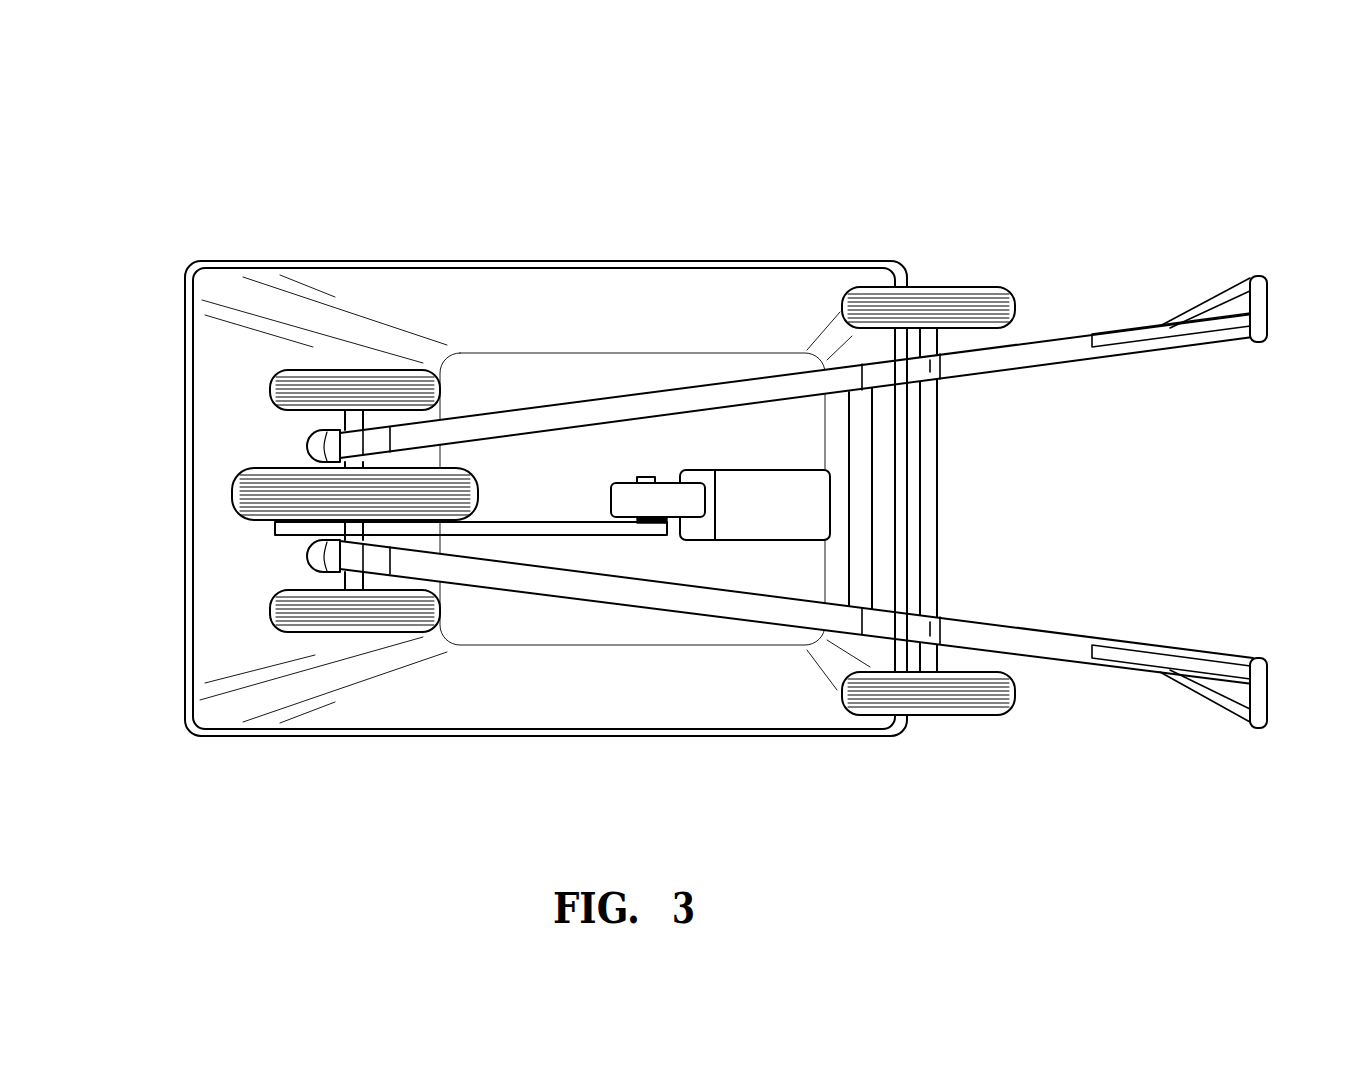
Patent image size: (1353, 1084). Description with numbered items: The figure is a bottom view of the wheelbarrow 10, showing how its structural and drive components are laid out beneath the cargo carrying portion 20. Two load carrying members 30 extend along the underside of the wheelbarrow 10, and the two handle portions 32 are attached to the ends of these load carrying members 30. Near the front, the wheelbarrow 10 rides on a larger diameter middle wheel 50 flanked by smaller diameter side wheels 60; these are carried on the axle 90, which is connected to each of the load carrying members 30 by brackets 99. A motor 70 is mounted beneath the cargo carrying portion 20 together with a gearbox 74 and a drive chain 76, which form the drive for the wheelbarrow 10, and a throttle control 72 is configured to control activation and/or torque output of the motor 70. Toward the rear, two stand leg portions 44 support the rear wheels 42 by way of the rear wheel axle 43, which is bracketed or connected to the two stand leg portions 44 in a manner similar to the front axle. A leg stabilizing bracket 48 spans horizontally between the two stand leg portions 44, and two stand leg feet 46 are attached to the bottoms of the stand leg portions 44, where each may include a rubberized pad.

The wheelbarrow 10 is at (165, 213).
The cargo carrying portion 20 is at (572, 312).
The load carrying members 30 is at (1062, 343).
The handle portions 32 is at (1260, 292).
The rear wheels 42 is at (958, 305).
The rear wheel axle 43 is at (930, 556).
The stand leg portions 44 is at (675, 605).
The stand leg feet 46 is at (878, 378).
The leg stabilizing bracket 48 is at (862, 437).
The larger diameter middle wheel 50 is at (250, 490).
The smaller diameter side wheels 60 is at (343, 385).
The motor 70 is at (810, 508).
The throttle control 72 is at (1195, 692).
The gearbox 74 is at (665, 495).
The drive chain 76 is at (510, 528).
The axle 90 is at (310, 441).
The brackets 99 is at (378, 436).